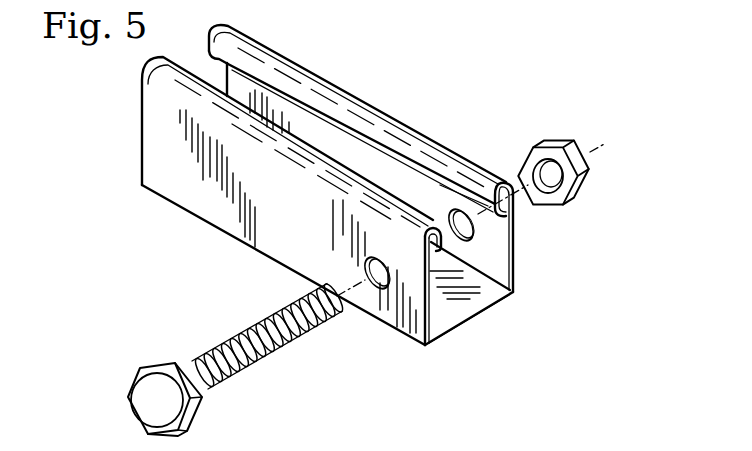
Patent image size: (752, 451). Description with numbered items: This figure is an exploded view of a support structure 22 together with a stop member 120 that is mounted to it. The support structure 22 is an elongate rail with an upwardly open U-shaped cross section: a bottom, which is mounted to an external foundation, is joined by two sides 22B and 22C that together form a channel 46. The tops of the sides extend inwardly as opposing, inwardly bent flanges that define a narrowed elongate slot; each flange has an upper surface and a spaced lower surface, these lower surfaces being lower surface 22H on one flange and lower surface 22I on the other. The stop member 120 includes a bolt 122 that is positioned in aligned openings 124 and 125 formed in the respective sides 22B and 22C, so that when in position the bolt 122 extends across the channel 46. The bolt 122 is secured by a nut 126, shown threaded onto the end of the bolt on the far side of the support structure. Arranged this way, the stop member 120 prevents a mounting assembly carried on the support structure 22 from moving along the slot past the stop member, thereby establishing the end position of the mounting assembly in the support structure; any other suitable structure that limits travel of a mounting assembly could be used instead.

The support structure 22 is at (370, 204).
The side 22B is at (426, 305).
The side 22C is at (513, 247).
The lower surface 22H is at (443, 231).
The lower surface 22I is at (499, 212).
The channel 46 is at (490, 268).
The stop member 120 is at (237, 359).
The bolt 122 is at (262, 324).
The opening 124 is at (377, 278).
The opening 125 is at (462, 222).
The nut 126 is at (553, 143).